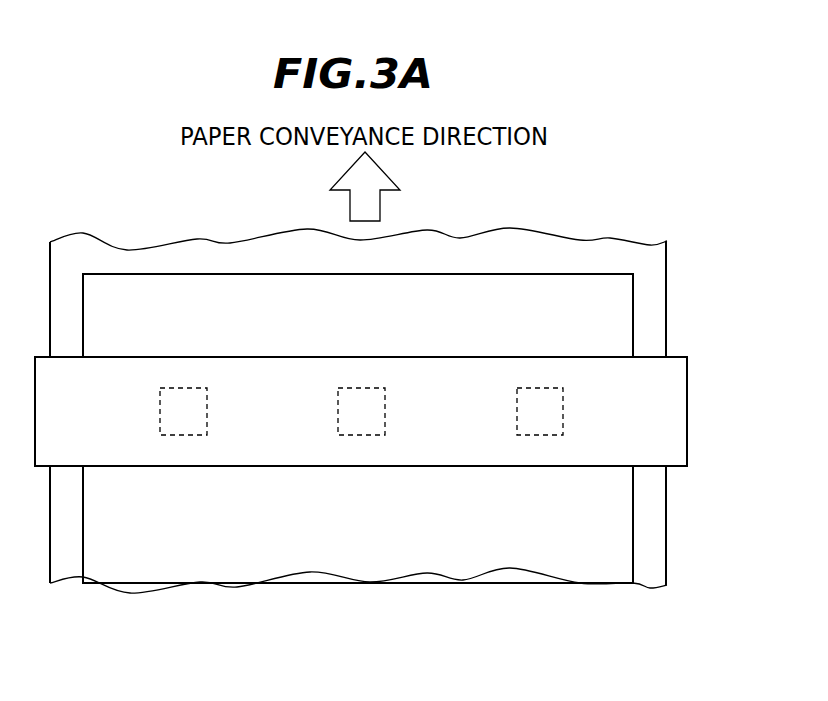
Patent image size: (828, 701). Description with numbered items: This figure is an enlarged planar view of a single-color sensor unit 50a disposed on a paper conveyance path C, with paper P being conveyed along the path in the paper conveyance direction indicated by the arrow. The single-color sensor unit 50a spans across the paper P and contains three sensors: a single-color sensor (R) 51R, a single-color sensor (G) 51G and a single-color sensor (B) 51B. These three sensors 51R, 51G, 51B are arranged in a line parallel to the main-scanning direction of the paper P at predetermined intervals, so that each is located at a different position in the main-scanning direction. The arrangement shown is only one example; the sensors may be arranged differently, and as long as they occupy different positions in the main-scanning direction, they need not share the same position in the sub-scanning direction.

The paper conveyance path C is at (668, 520).
The paper P is at (618, 315).
The single-color sensor unit 50a is at (688, 377).
The single-color sensor (R) 51R is at (185, 387).
The single-color sensor (G) 51G is at (372, 387).
The single-color sensor (B) 51B is at (542, 387).